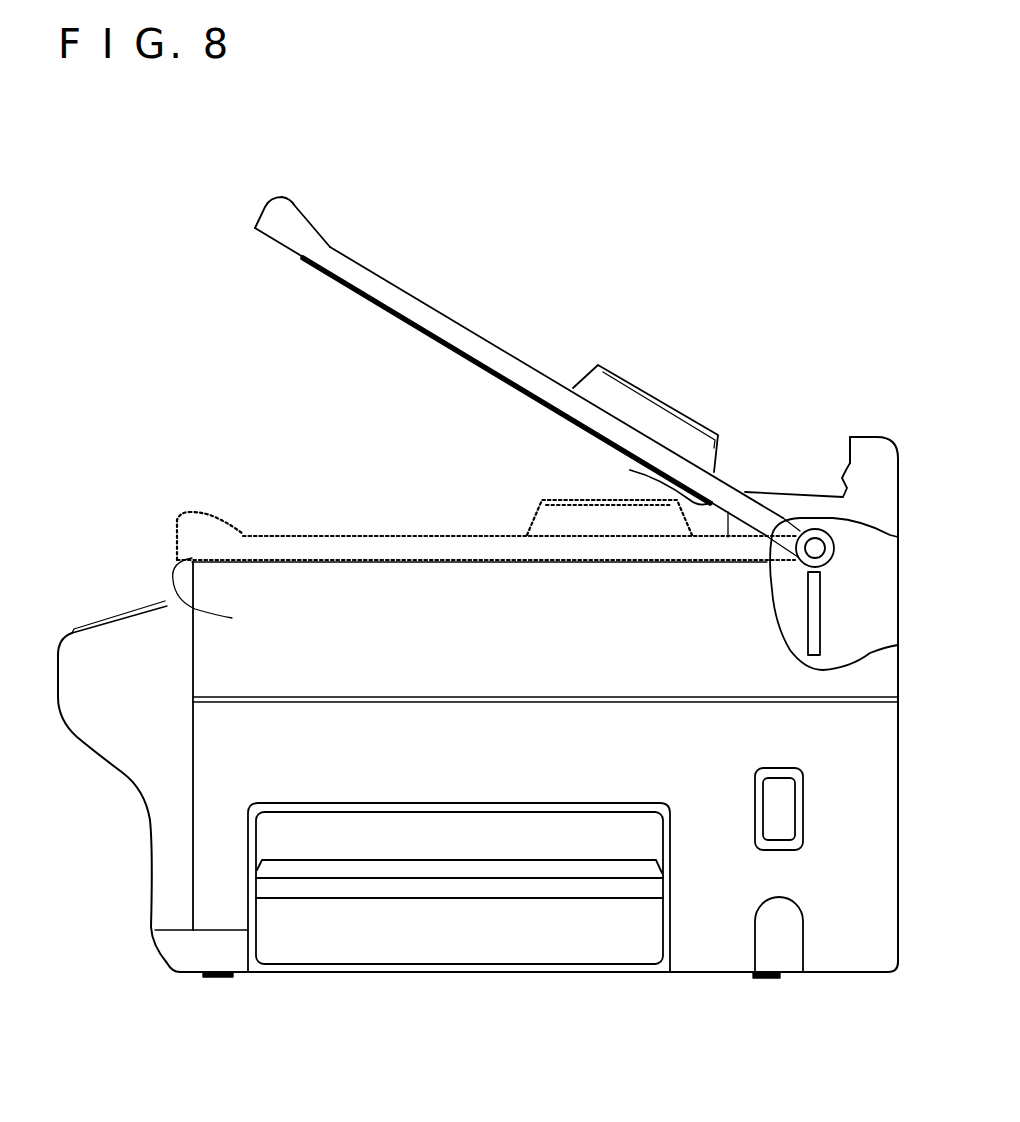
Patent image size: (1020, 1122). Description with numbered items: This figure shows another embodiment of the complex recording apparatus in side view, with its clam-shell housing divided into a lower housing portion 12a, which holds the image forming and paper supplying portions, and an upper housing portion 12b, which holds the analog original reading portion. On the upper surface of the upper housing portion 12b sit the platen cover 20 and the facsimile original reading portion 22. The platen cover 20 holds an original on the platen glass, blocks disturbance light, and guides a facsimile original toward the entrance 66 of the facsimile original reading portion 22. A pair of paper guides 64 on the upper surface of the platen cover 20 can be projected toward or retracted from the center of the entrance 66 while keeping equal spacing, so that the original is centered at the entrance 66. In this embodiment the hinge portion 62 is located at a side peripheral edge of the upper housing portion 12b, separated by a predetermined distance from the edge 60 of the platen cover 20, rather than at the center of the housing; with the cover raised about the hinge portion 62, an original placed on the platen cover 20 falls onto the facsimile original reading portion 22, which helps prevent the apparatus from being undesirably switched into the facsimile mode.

The lower housing portion 12a is at (227, 782).
The upper housing portion 12b is at (165, 603).
The platen cover 20 is at (507, 343).
The facsimile original reading portion 22 is at (800, 467).
The edge 60 is at (627, 491).
The hinge portion 62 is at (822, 558).
The paper guides 64 is at (655, 391).
The entrance 66 is at (718, 538).